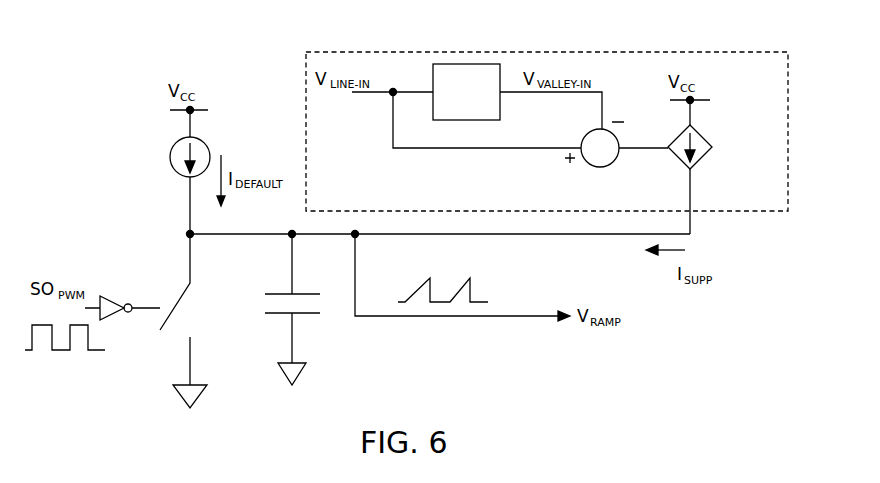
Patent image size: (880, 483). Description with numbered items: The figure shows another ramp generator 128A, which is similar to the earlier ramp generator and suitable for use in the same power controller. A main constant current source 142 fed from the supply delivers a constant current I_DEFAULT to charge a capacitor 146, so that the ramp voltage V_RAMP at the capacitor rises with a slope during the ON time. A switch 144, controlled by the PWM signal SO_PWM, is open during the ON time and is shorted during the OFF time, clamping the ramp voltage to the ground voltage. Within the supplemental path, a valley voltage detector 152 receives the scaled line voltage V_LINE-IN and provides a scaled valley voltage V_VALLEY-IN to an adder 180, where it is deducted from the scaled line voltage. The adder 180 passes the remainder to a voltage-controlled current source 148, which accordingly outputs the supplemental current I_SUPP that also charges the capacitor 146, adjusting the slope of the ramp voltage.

The ramp generator 128A is at (262, 70).
The main constant current source 142 is at (170, 158).
The switch 144 is at (196, 313).
The capacitor 146 is at (265, 303).
The voltage-controlled current source 148 is at (702, 135).
The valley voltage detector 152 is at (453, 101).
The adder 180 is at (596, 167).